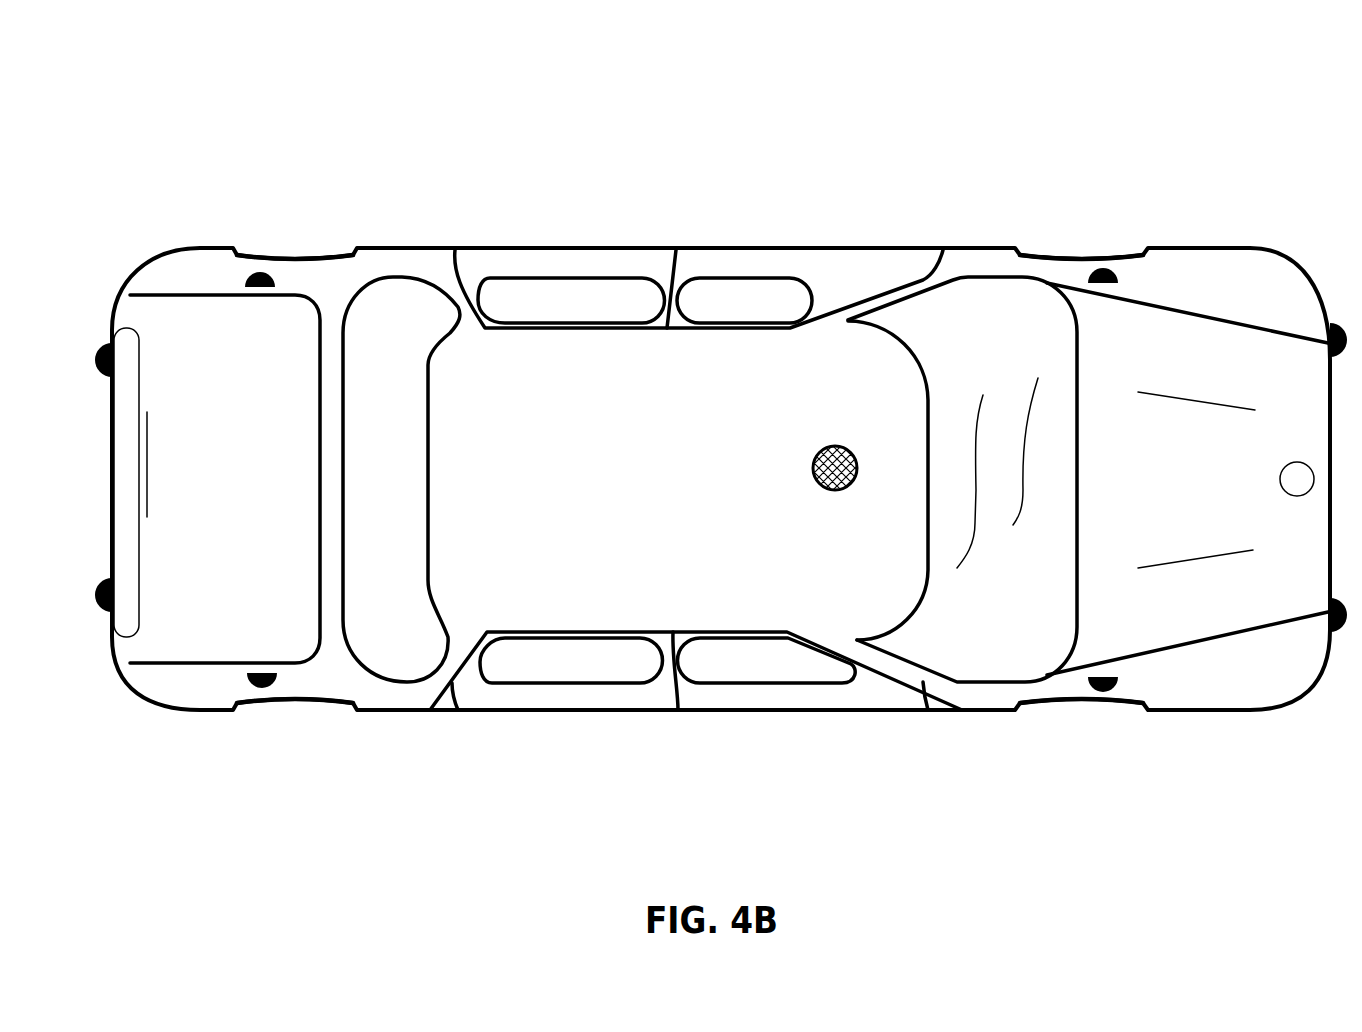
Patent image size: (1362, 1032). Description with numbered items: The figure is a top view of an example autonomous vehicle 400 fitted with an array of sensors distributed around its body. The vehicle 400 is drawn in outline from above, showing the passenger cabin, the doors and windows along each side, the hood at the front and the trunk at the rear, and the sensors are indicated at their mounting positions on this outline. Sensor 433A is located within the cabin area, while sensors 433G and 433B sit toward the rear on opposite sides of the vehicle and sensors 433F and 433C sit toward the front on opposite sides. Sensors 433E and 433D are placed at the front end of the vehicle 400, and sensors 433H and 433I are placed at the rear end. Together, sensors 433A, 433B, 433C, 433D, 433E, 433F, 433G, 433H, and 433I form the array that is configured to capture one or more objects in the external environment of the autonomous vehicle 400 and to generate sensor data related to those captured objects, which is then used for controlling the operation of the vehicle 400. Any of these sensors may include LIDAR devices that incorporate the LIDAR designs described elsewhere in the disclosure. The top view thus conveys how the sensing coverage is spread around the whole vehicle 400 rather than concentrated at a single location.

The autonomous vehicle 400 is at (1195, 93).
The sensor 433A is at (832, 447).
The sensor 433B is at (277, 675).
The sensor 433C is at (1118, 680).
The sensor 433D is at (1328, 612).
The sensor 433E is at (1328, 342).
The sensor 433F is at (1118, 281).
The sensor 433G is at (275, 286).
The sensor 433H is at (113, 363).
The sensor 433I is at (113, 595).